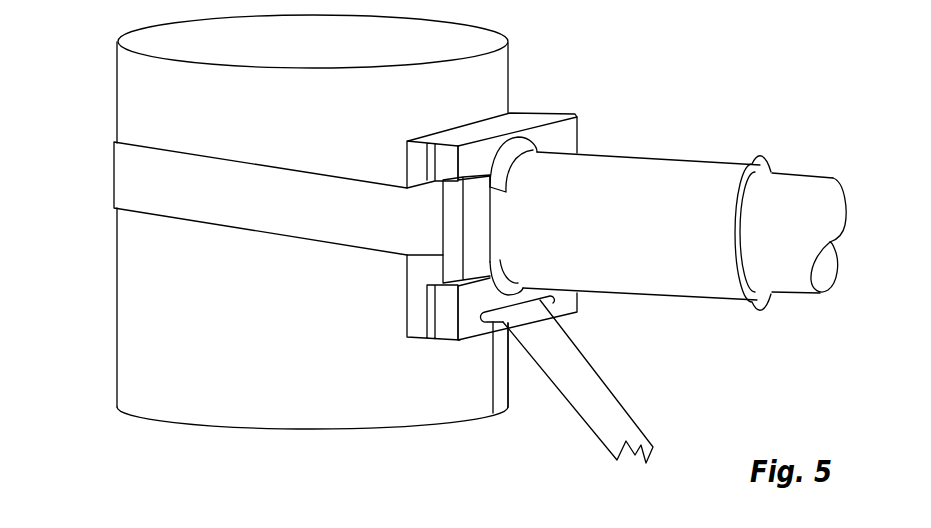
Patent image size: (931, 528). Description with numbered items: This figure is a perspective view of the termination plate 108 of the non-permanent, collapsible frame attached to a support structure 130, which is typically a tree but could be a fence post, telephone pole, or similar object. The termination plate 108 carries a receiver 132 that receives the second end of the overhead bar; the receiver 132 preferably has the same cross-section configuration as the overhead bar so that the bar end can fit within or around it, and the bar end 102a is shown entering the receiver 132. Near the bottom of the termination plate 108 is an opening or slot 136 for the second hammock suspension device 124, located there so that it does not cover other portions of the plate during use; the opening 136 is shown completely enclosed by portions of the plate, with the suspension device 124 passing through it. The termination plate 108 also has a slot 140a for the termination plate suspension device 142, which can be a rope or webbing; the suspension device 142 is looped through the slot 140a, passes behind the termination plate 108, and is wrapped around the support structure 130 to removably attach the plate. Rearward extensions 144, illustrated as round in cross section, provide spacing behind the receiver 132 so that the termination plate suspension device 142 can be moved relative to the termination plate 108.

The support structure 130 is at (148, 303).
The termination plate suspension device 142 is at (133, 178).
The rearward extensions 144 is at (405, 163).
The slot 140a is at (452, 265).
The termination plate 108 is at (578, 125).
The receiver 132 is at (698, 158).
The end cap / fitting 102a is at (810, 175).
The second hammock suspension device 124 is at (620, 400).
The opening or slot 136 is at (495, 350).